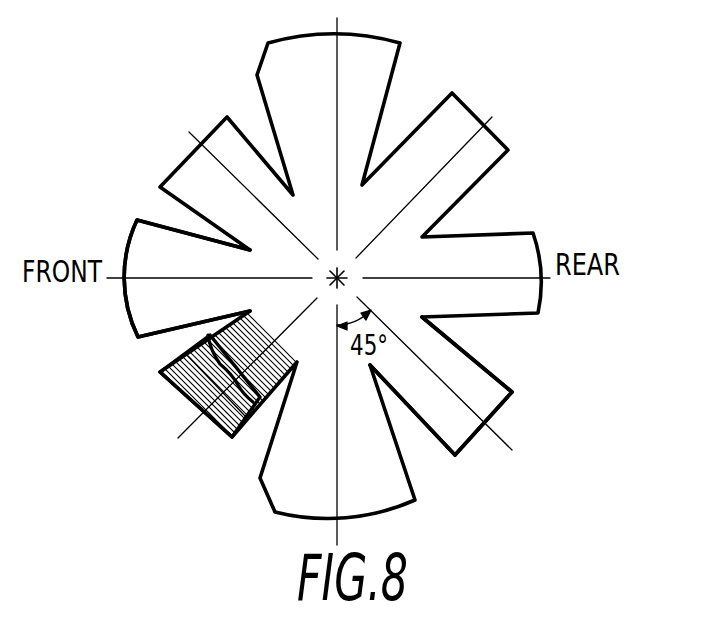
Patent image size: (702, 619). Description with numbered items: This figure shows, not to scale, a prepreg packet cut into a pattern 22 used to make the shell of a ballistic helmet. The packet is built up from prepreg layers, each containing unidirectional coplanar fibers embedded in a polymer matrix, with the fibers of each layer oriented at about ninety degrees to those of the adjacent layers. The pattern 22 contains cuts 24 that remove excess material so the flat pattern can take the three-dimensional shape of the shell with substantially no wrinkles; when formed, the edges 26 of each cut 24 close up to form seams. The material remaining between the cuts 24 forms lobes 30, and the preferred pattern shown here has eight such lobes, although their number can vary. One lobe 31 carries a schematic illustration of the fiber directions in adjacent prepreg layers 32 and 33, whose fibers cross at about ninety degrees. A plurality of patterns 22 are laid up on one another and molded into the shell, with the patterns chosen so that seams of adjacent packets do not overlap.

The pattern 22 is at (244, 466).
The cut 24 is at (428, 463).
The edges 26 is at (437, 431).
The lobe 30 is at (145, 242).
The lobe 31 is at (193, 408).
The prepreg layer 32 is at (180, 398).
The prepreg layer 33 is at (222, 333).